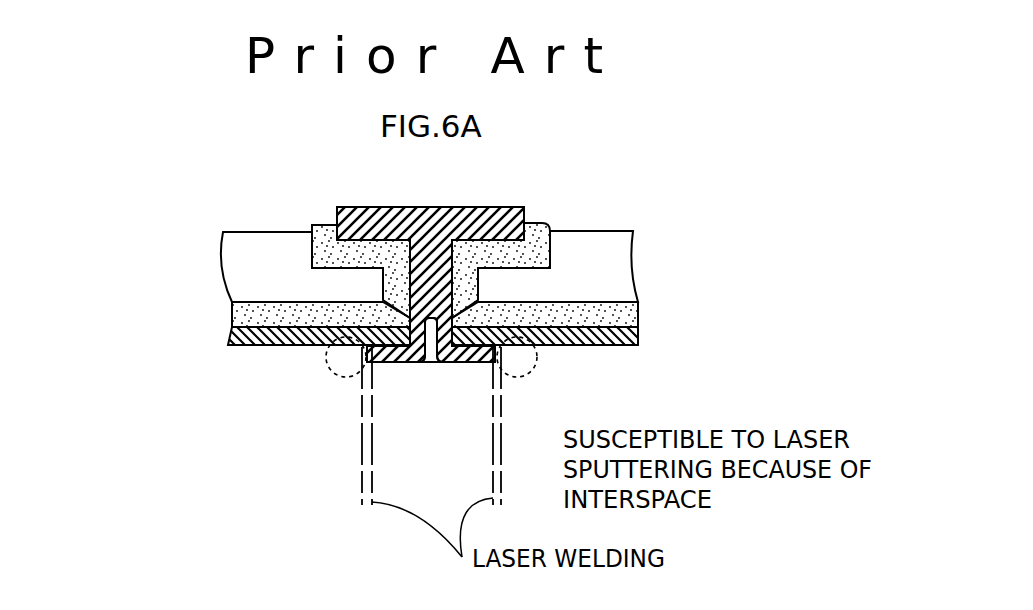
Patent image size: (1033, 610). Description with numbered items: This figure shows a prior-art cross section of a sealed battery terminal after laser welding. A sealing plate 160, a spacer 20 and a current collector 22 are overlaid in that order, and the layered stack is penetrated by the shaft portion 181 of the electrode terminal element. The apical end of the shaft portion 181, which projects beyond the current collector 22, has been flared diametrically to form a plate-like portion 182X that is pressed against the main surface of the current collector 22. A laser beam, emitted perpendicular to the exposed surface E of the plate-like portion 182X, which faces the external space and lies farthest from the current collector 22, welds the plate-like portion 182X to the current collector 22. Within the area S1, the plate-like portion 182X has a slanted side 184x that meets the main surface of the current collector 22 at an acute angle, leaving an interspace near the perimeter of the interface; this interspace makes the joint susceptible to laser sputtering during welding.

The shaft portion 181 is at (455, 288).
The sealing plate 160 is at (617, 267).
The spacer 20 is at (633, 313).
The current collector 22 is at (640, 338).
The slanted side 184x is at (337, 350).
The area S1 is at (332, 372).
The plate-like portion 182X is at (408, 362).
The another surface E is at (468, 362).